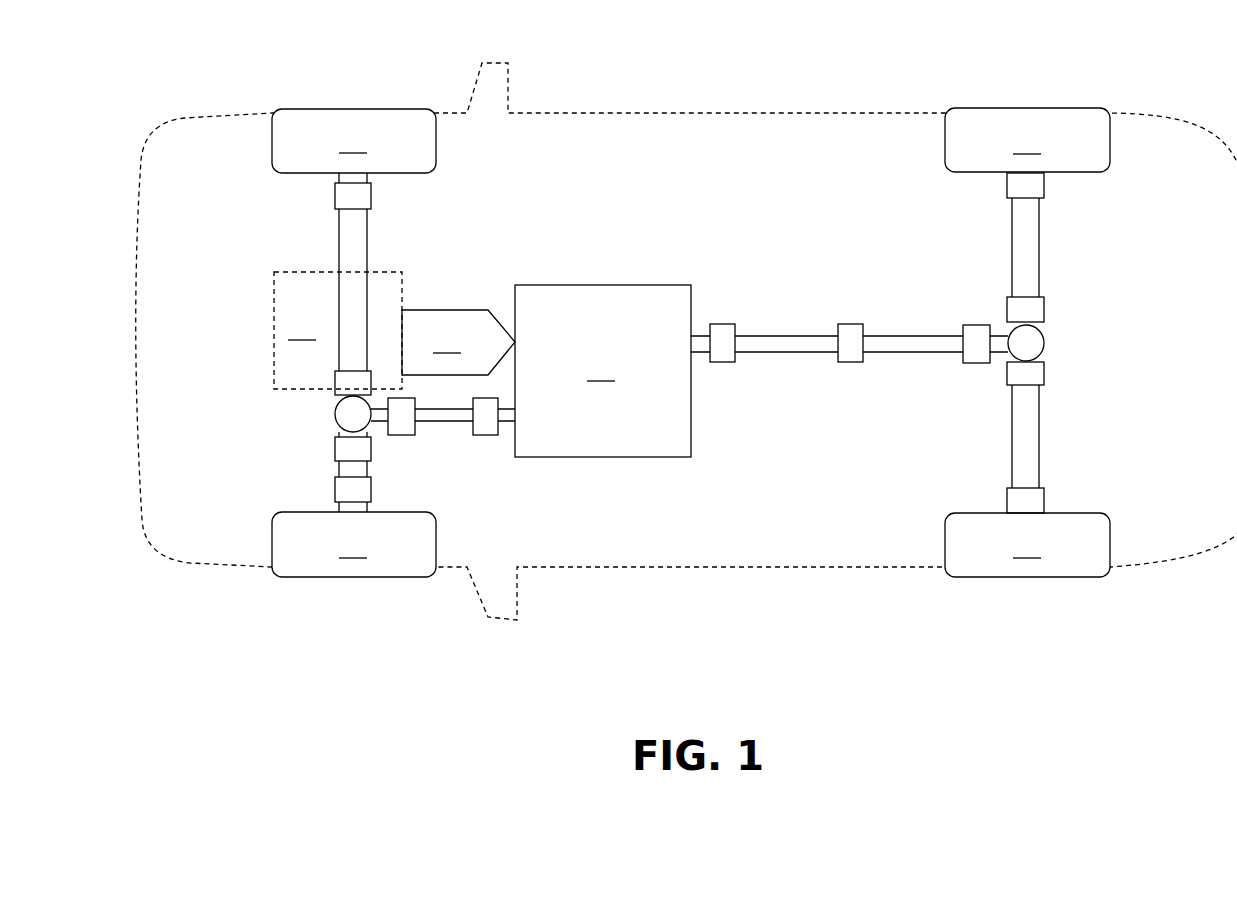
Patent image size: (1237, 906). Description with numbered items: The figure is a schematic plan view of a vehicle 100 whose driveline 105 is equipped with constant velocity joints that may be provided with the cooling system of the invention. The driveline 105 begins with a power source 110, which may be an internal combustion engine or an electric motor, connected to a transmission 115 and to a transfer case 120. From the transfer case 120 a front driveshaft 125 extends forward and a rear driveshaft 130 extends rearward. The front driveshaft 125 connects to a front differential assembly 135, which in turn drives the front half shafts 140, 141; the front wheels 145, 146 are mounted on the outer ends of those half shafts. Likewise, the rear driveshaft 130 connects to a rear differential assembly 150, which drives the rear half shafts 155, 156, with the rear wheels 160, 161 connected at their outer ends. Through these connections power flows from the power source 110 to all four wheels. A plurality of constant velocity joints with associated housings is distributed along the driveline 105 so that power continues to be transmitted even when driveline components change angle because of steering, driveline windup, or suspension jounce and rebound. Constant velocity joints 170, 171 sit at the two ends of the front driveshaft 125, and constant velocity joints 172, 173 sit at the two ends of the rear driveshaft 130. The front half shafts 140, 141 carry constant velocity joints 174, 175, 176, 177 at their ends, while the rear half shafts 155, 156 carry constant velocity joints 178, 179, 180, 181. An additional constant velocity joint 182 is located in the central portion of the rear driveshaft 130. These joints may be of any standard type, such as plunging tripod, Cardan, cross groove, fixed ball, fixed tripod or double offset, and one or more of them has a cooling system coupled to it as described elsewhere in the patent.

The vehicle 100 is at (232, 572).
The driveline 105 is at (742, 142).
The power source 110 is at (338, 330).
The transmission 115 is at (458, 342).
The transfer case 120 is at (603, 371).
The front driveshaft 125 is at (445, 418).
The rear driveshaft 130 is at (905, 350).
The front differential assembly 135 is at (355, 418).
The front half shaft 140 is at (345, 470).
The front half shaft 141 is at (355, 223).
The front wheel 145 is at (354, 544).
The front wheel 146 is at (354, 141).
The rear differential assembly 150 is at (1027, 343).
The rear half shaft 155 is at (1033, 482).
The rear half shaft 156 is at (1025, 253).
The rear wheel 160 is at (1027, 545).
The rear wheel 161 is at (1027, 140).
The constant velocity joint 170 is at (403, 418).
The constant velocity joint 171 is at (485, 422).
The constant velocity joint 172 is at (722, 353).
The constant velocity joint 173 is at (975, 352).
The constant velocity joint 174 is at (350, 486).
The constant velocity joint 175 is at (342, 447).
The constant velocity joint 176 is at (335, 383).
The constant velocity joint 177 is at (355, 192).
The constant velocity joint 178 is at (1017, 503).
The constant velocity joint 179 is at (1040, 375).
The constant velocity joint 180 is at (1017, 310).
The constant velocity joint 181 is at (1017, 183).
The constant velocity joint 182 is at (852, 330).